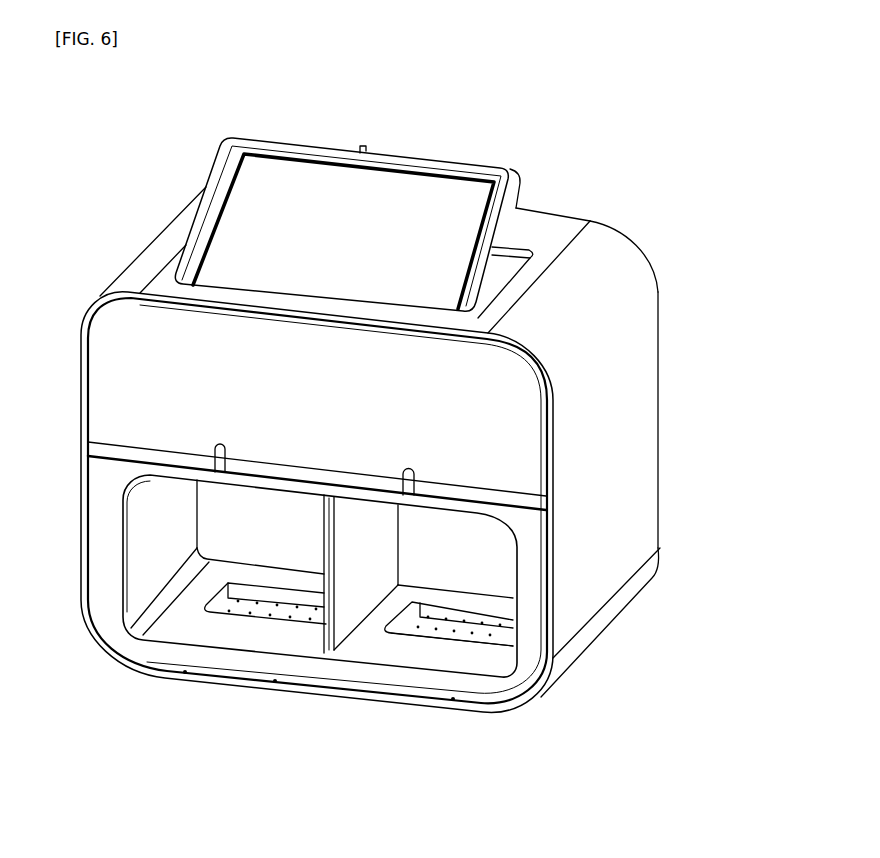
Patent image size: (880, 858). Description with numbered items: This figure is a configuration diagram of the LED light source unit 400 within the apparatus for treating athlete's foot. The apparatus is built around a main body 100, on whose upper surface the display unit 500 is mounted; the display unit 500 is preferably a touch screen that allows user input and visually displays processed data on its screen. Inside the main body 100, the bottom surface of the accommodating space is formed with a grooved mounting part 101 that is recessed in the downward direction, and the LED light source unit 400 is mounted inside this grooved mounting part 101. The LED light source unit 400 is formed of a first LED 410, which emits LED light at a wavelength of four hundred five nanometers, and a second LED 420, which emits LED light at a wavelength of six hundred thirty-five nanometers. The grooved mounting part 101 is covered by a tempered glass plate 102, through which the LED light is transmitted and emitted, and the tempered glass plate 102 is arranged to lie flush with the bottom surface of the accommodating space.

The main body 100 is at (623, 416).
The grooved mounting part 101 is at (458, 638).
The tempered glass plate 102 is at (283, 612).
The LED light source unit 400 is at (485, 646).
The first LED 410 is at (415, 632).
The second LED 420 is at (440, 630).
The display unit 500 is at (410, 202).